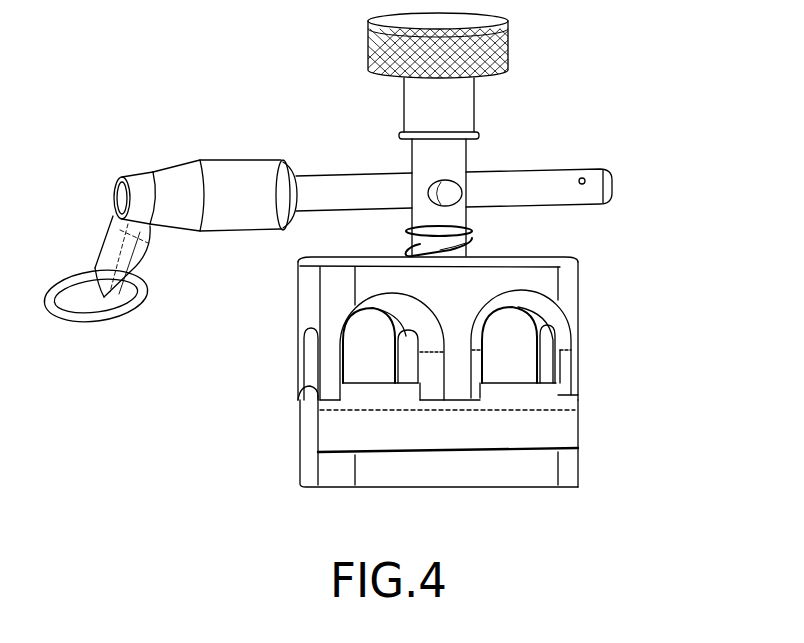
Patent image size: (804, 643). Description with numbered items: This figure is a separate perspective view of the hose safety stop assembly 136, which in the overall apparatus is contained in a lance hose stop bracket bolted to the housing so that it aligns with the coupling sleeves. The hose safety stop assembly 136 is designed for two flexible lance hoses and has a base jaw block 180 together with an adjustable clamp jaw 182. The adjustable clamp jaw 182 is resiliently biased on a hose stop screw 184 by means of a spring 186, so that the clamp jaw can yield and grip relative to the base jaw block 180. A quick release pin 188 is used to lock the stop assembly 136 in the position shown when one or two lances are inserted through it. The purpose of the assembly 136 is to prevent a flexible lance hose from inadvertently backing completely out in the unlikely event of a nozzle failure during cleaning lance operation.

The hose safety stop assembly 136 is at (664, 104).
The base jaw block 180 is at (578, 434).
The adjustable clamp jaw 182 is at (578, 308).
The hose stop screw 184 is at (466, 155).
The spring 186 is at (468, 245).
The quick release pin 188 is at (598, 206).